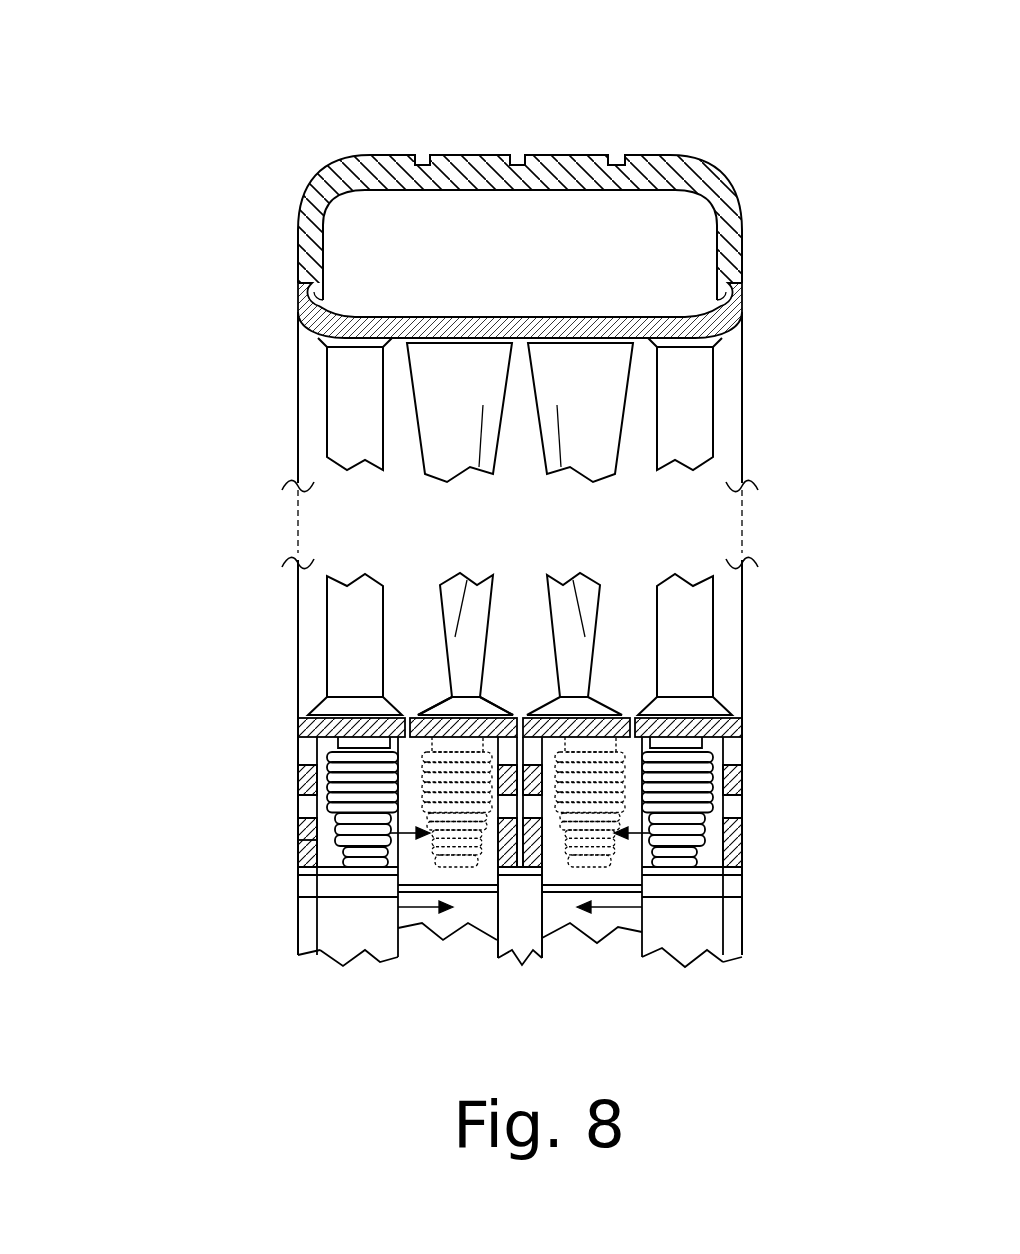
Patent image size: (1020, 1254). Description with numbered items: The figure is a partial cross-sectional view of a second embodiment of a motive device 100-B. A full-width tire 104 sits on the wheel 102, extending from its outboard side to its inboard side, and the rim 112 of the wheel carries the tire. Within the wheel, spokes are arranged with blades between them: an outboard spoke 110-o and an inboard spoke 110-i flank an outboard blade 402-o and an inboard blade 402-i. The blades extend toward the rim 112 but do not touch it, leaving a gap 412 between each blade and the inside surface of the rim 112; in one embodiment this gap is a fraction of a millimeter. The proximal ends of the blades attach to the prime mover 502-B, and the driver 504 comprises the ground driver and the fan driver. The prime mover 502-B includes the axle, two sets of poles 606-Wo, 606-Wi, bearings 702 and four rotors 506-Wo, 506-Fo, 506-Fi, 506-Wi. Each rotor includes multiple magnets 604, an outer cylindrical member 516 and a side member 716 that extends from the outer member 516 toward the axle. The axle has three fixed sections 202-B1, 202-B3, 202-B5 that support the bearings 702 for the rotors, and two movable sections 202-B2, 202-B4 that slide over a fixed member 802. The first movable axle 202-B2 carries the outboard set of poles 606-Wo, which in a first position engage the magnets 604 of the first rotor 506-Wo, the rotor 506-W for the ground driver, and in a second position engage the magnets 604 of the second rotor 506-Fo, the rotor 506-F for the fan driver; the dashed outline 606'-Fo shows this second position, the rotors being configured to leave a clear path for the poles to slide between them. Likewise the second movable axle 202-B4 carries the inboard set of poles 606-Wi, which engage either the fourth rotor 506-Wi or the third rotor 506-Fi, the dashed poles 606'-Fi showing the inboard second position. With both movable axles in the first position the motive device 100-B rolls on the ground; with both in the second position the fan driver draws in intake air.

The motive device 100-B is at (235, 71).
The full-width tire 104 is at (577, 155).
The gap 412 is at (458, 335).
The rim 112 is at (742, 290).
The wheel 102 is at (742, 347).
The driver 504 is at (148, 516).
The outboard spoke 110-o is at (325, 402).
The inboard spoke 110-i is at (717, 630).
The outboard blade 402-o is at (480, 473).
The inboard blade 402-i is at (590, 587).
The second rotor 506-Fo is at (419, 712).
The third rotor 506-Fi is at (530, 712).
The fan driver rotor 506-F is at (423, 713).
The outer cylindrical member 516 is at (302, 718).
The ground driver rotor 506-W is at (298, 778).
The first rotor 506-Wo is at (298, 823).
The fourth rotor 506-Wi is at (742, 730).
The bearings 702 is at (298, 853).
The side member 716 is at (742, 780).
The magnets 604 is at (723, 740).
The prime mover 502-B is at (147, 778).
The first set of poles 606-Wo is at (327, 775).
The inboard set of poles 606-Wi is at (707, 833).
The second set of poles 606'-Fo is at (478, 893).
The third poles 606'-Fi is at (616, 893).
The fixed axle section 202-B1 is at (298, 918).
The first movable axle 202-B2 is at (343, 967).
The fixed axle section 202-B3 is at (513, 960).
The second movable axle 202-B4 is at (686, 967).
The fixed axle section 202-B5 is at (742, 918).
The fixed member 802 is at (413, 925).